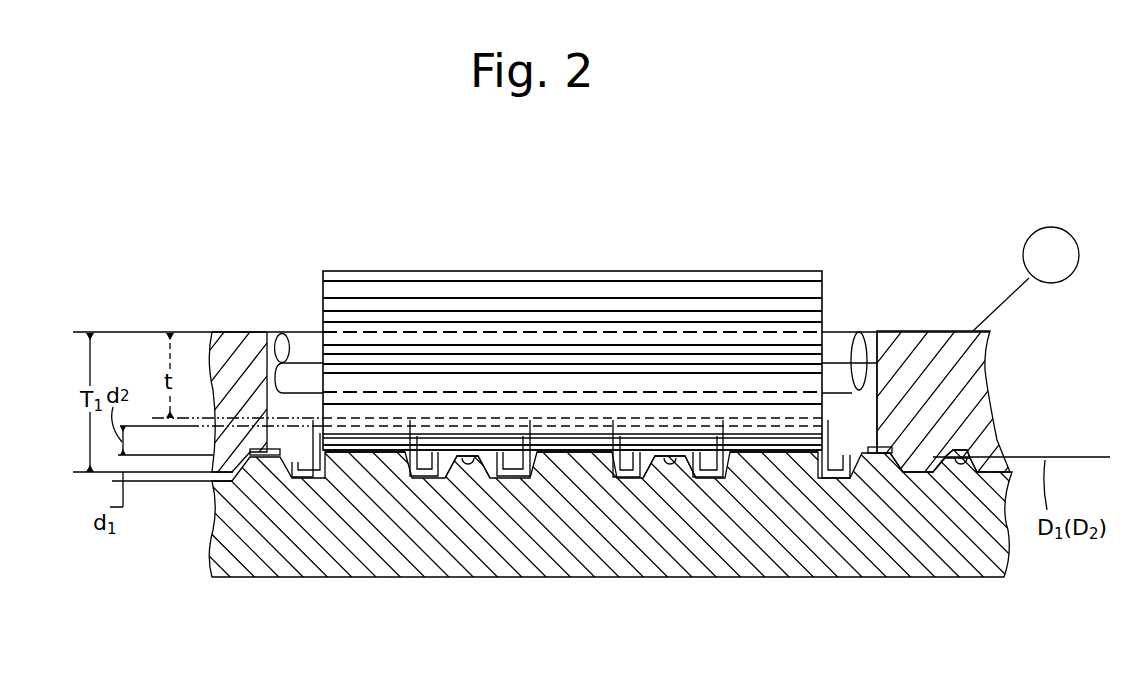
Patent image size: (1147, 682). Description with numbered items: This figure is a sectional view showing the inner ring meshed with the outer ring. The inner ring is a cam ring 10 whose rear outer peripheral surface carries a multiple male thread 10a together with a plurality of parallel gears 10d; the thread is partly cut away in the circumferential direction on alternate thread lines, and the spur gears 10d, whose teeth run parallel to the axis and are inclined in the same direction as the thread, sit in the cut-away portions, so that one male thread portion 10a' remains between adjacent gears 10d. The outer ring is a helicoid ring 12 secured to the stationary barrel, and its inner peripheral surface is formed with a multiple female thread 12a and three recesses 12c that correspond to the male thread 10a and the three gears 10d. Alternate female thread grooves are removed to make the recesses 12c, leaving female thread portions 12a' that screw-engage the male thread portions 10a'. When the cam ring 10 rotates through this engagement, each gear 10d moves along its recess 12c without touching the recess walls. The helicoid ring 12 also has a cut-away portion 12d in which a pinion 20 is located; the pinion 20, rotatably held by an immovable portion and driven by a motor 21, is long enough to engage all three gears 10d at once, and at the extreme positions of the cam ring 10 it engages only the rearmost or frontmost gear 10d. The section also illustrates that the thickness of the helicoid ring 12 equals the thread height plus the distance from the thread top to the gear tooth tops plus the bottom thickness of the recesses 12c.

The cam ring 10 is at (290, 542).
The multiple male thread 10a is at (959, 541).
The male thread portion 10a' is at (581, 544).
The gear 10d is at (358, 462).
The helicoid ring 12 is at (973, 380).
The multiple female thread 12a is at (927, 356).
The female thread portion 12a' is at (572, 339).
The recess 12c is at (408, 470).
The cut-away portion 12d is at (870, 423).
The pinion 20 is at (615, 262).
The motor 21 is at (1027, 240).